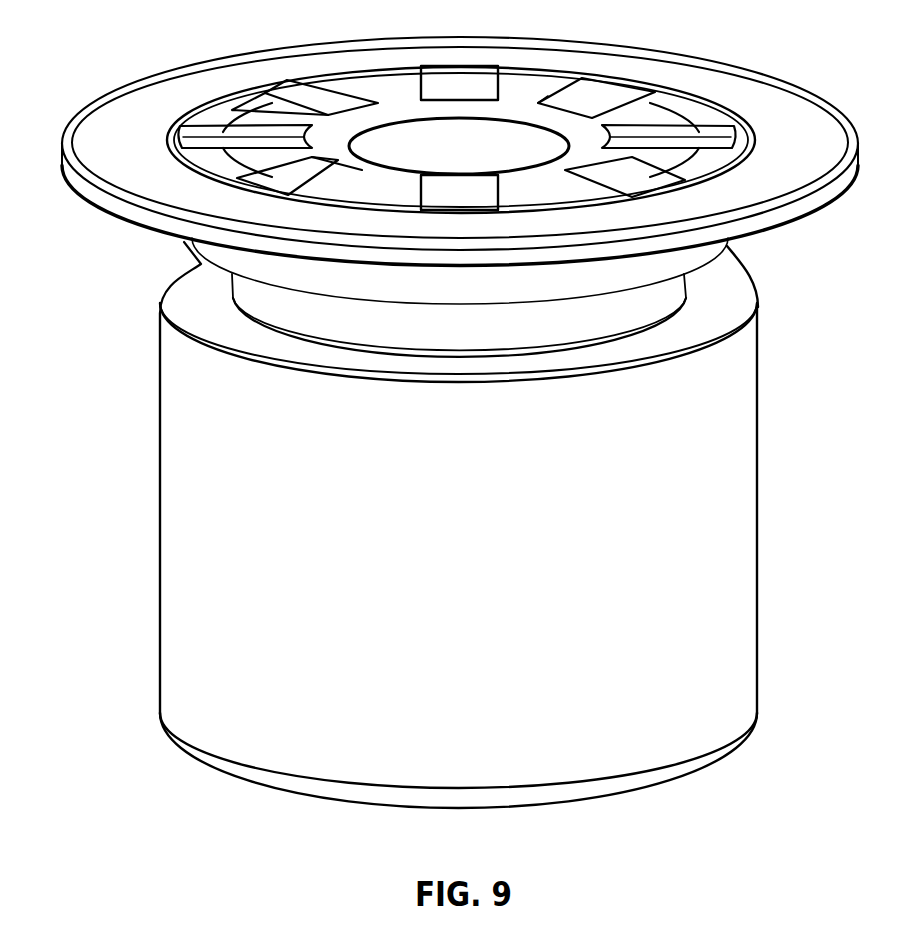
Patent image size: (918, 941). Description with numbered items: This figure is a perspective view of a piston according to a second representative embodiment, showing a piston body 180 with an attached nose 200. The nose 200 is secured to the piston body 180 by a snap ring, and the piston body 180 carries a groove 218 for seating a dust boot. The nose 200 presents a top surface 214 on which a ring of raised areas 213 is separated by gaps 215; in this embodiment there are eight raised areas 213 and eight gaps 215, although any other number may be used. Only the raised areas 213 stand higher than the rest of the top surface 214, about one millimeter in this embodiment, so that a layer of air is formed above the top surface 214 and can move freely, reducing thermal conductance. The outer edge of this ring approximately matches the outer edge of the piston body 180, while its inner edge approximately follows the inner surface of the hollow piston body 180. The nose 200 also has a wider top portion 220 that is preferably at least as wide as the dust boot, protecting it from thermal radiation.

The piston body 180 is at (760, 643).
The nose 200 is at (727, 245).
The raised areas 213 is at (660, 92).
The top surface 214 is at (248, 68).
The gaps 215 is at (620, 88).
The groove 218 is at (183, 300).
The wider top portion 220 is at (100, 98).